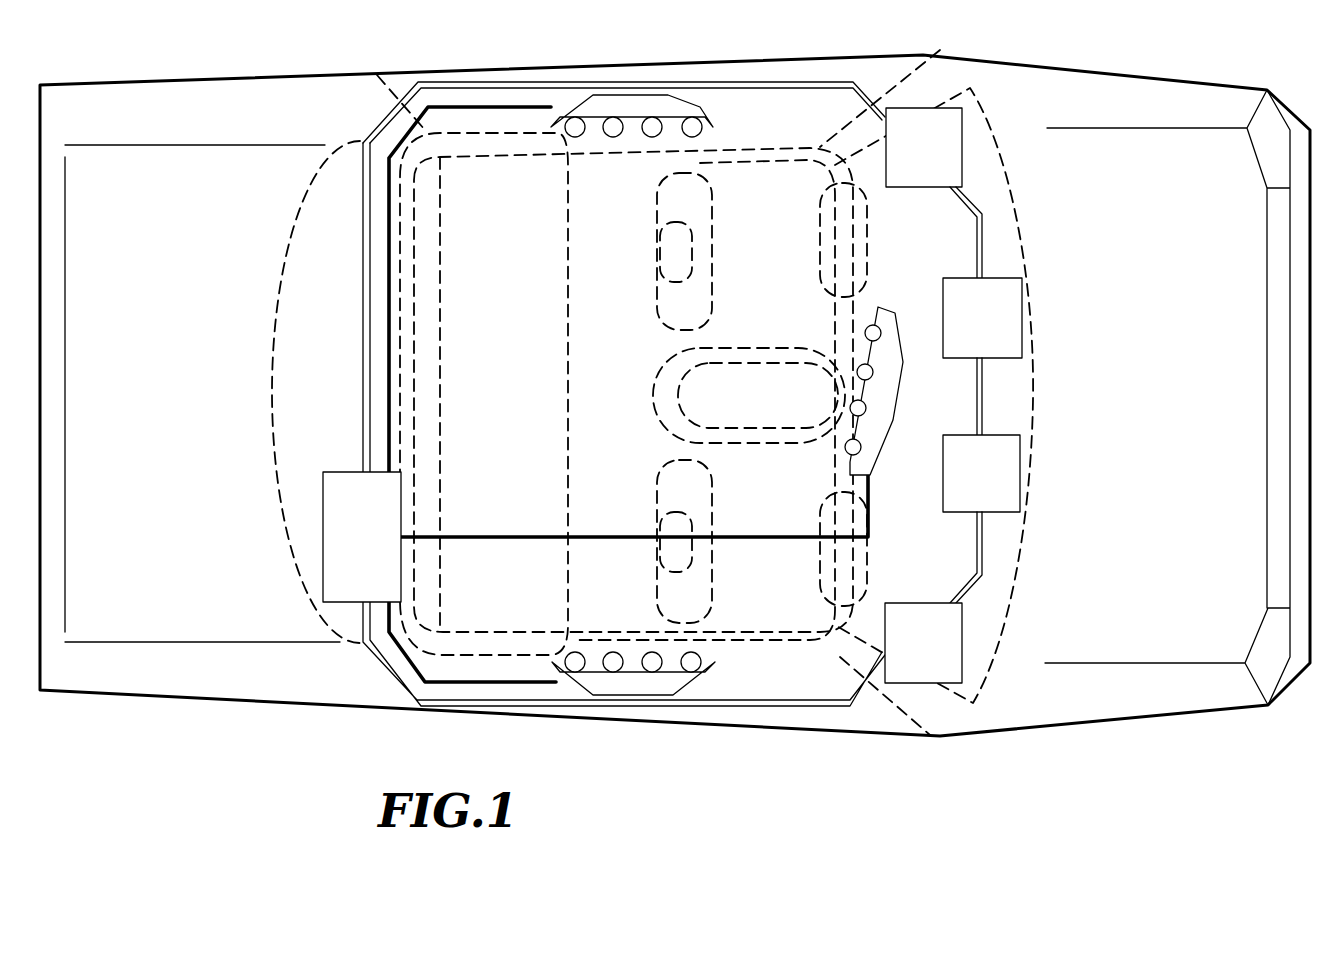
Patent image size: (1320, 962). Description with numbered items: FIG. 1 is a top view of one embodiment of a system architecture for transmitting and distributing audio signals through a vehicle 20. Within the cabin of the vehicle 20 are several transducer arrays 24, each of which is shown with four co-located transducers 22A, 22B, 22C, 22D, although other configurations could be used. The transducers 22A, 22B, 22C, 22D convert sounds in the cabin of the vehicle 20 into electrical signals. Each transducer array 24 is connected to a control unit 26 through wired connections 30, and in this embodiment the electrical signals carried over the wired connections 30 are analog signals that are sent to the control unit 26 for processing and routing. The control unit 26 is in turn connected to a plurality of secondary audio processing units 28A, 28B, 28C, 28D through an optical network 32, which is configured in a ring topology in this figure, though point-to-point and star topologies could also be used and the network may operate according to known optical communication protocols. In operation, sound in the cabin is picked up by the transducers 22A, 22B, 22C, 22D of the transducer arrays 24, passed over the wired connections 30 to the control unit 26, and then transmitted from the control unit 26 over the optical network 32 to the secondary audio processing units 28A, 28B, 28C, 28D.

The vehicle 20 is at (1088, 63).
The transducer 22A is at (877, 327).
The transducer 22B is at (858, 366).
The transducer 22C is at (850, 410).
The transducer 22D is at (848, 451).
The transducer array 24 is at (614, 104).
The control unit 26 is at (323, 535).
The secondary audio processing unit 28A is at (962, 138).
The secondary audio processing unit 28B is at (1022, 297).
The secondary audio processing unit 28C is at (1022, 455).
The secondary audio processing unit 28D is at (962, 628).
The wired connections 30 is at (392, 337).
The optical network 32 is at (738, 82).